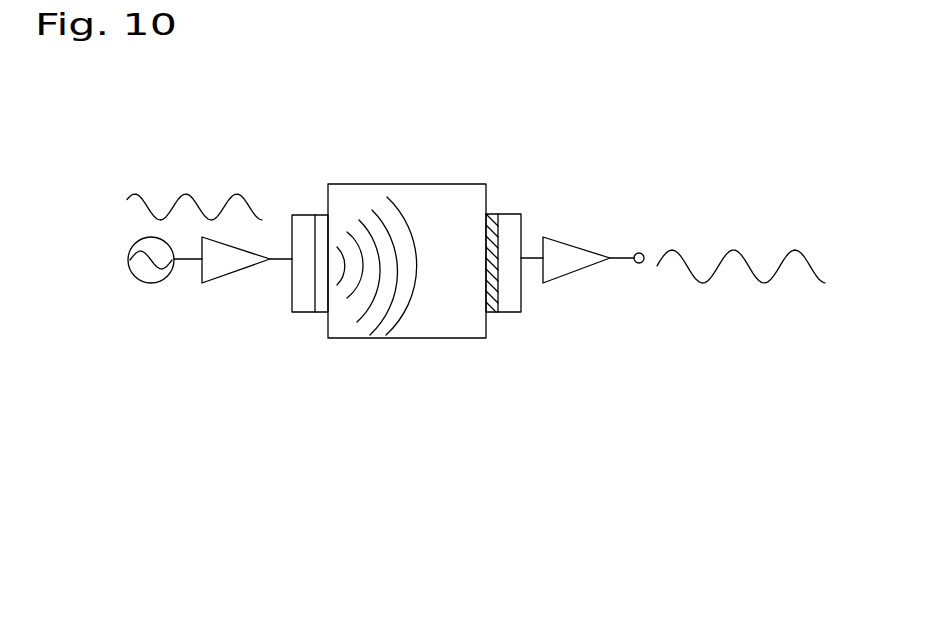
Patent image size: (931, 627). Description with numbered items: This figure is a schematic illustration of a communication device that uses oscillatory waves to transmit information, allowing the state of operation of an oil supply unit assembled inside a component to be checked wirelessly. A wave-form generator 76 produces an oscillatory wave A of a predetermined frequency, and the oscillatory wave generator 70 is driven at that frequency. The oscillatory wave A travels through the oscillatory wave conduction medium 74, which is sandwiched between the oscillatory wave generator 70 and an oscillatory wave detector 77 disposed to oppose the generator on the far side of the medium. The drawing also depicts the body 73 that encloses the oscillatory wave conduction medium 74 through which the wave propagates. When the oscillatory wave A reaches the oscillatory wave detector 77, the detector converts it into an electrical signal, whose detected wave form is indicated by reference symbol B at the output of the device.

The oscillatory wave generator 70 is at (302, 211).
The measuring cell body 73 is at (457, 338).
The oscillatory wave conduction medium 74 is at (438, 238).
The wave-form generator 76 is at (145, 267).
The oscillatory wave detector 77 is at (503, 228).
The oscillatory wave A is at (188, 196).
The detected wave form B is at (731, 248).